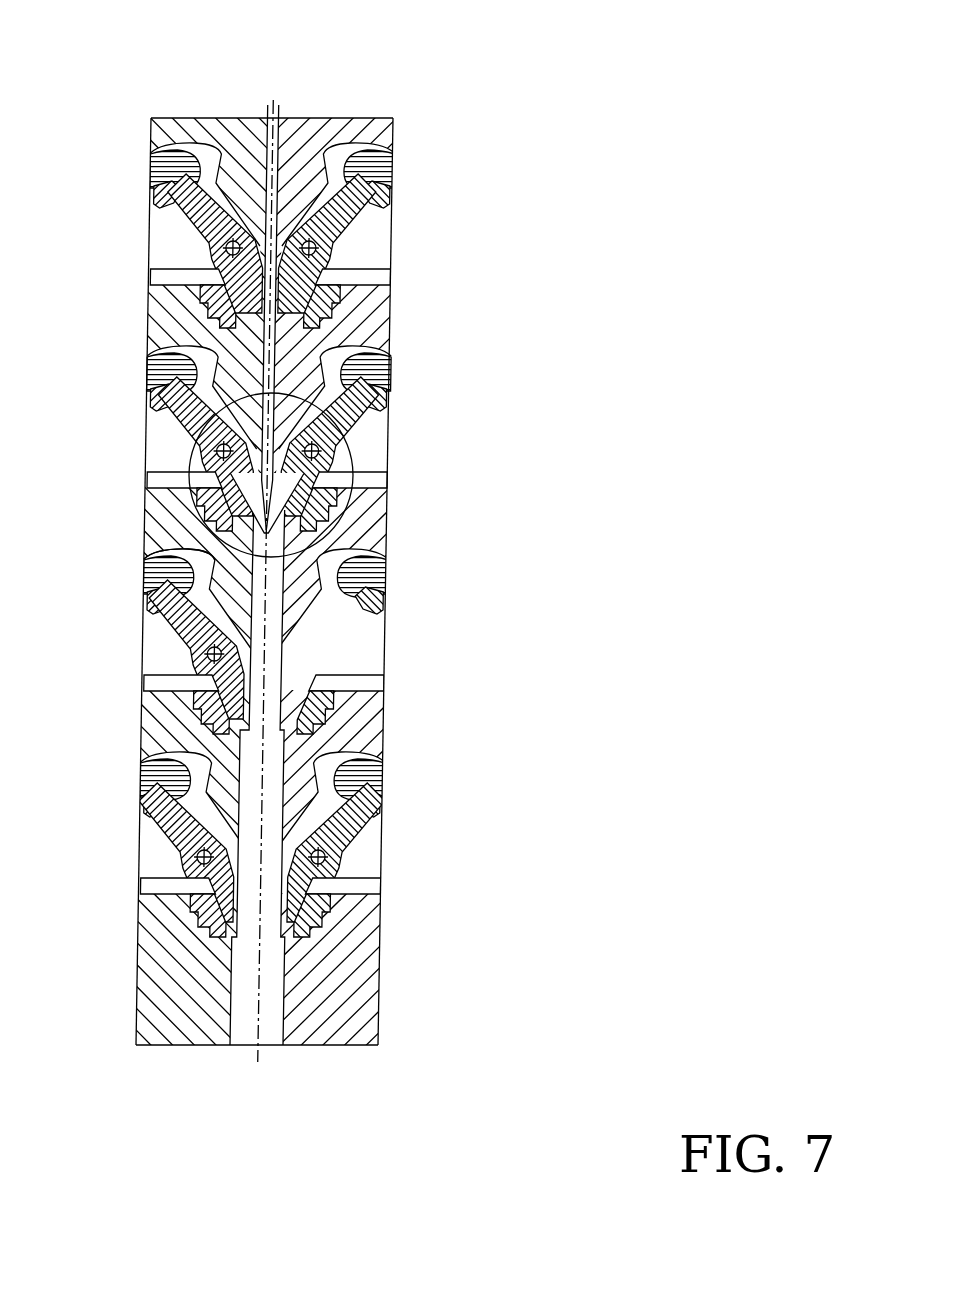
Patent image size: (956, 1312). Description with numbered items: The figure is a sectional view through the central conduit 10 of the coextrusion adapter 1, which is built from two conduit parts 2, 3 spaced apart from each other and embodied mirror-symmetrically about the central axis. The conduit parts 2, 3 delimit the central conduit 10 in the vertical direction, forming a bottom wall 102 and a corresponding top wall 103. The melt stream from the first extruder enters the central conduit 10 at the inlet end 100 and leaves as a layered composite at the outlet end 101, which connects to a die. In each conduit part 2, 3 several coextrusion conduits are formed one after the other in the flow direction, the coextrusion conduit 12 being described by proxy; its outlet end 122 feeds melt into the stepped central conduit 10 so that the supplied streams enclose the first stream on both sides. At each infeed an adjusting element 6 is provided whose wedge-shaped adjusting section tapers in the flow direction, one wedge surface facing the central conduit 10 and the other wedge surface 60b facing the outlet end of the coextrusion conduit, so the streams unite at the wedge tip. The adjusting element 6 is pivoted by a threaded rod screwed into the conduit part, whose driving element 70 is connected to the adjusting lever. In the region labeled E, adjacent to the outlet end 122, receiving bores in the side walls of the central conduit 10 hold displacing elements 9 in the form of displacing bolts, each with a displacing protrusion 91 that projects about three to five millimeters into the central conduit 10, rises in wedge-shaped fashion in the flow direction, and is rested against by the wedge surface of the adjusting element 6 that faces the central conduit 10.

The coextrusion adapter 1 is at (264, 581).
The conduit part 2 is at (385, 581).
The conduit part 3 is at (143, 581).
The adjusting element 6 is at (267, 441).
The displacing element 9 is at (316, 644).
The central conduit 10 is at (266, 581).
The coextrusion conduit 12 is at (268, 401).
The wedge surface 60b is at (179, 554).
The driving element 70 is at (268, 413).
The displacing protrusion 91 is at (266, 503).
The inlet end 100 is at (270, 315).
The outlet end 101 is at (261, 772).
The bottom wall 102 is at (272, 317).
The top wall 103 is at (267, 317).
The outlet end 122 is at (267, 516).
The region E is at (375, 523).